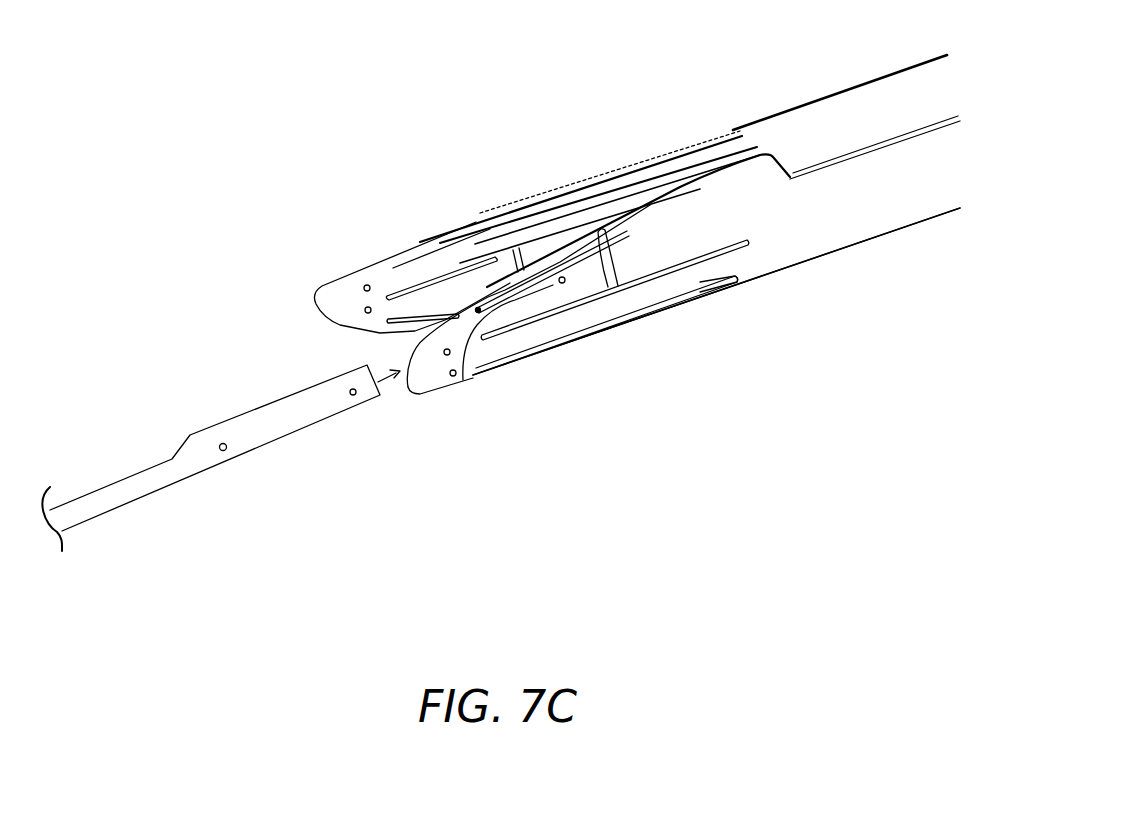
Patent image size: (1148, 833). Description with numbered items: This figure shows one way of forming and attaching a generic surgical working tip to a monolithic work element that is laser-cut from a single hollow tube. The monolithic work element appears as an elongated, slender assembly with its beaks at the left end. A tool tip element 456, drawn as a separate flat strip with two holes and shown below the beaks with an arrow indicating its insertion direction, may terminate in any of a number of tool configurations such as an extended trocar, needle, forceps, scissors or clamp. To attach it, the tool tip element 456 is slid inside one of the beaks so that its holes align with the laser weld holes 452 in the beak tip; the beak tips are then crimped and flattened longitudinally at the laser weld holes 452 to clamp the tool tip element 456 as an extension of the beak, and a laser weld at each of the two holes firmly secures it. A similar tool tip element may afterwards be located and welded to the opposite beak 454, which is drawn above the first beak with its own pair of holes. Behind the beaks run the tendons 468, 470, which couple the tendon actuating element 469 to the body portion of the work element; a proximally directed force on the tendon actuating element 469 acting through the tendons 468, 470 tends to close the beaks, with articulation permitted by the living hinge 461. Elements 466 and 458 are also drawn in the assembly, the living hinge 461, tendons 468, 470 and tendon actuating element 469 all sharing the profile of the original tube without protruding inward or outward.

The laser weld holes 452 is at (440, 358).
The opposite beak 454 is at (370, 263).
The tool tip element 456 is at (270, 445).
The shaft tip 458 is at (715, 272).
The living hinge 461 is at (667, 266).
The link 466 is at (603, 238).
The tendon 468 is at (507, 277).
The tendon actuating element 469 is at (831, 121).
The tendon 470 is at (537, 360).